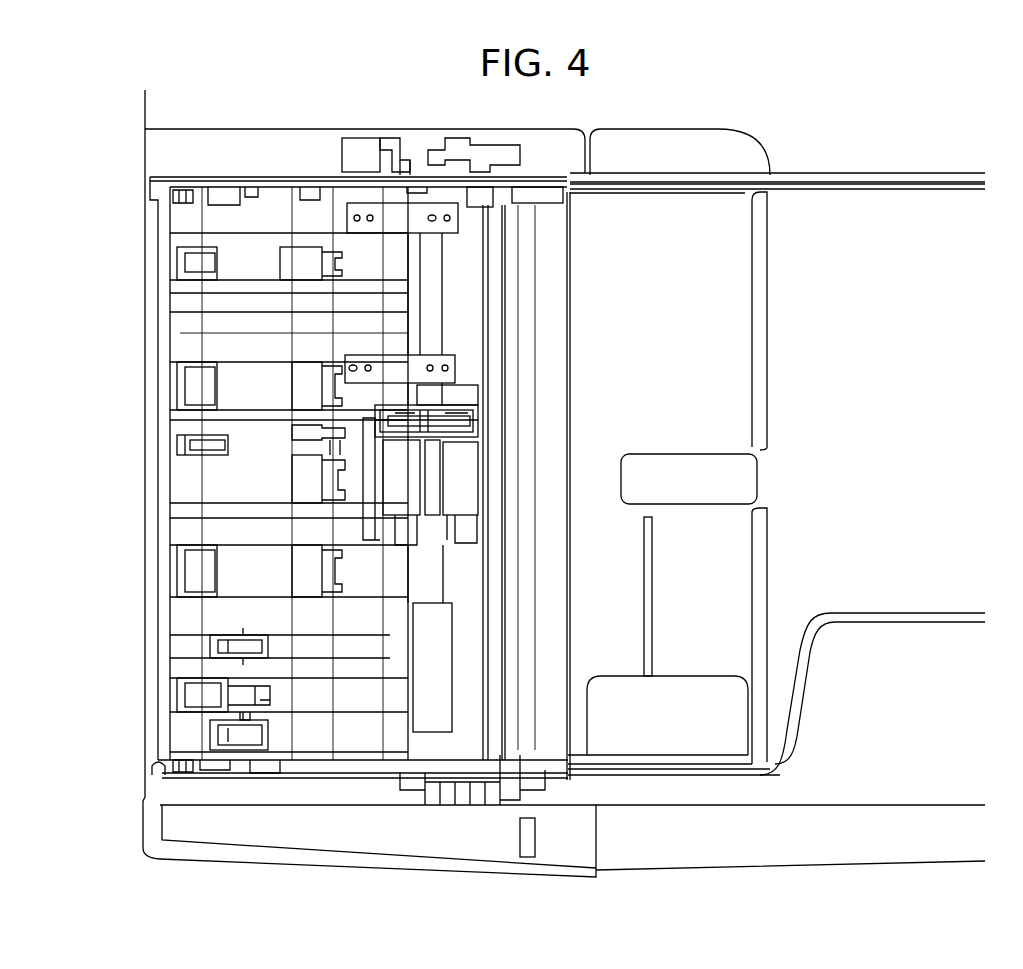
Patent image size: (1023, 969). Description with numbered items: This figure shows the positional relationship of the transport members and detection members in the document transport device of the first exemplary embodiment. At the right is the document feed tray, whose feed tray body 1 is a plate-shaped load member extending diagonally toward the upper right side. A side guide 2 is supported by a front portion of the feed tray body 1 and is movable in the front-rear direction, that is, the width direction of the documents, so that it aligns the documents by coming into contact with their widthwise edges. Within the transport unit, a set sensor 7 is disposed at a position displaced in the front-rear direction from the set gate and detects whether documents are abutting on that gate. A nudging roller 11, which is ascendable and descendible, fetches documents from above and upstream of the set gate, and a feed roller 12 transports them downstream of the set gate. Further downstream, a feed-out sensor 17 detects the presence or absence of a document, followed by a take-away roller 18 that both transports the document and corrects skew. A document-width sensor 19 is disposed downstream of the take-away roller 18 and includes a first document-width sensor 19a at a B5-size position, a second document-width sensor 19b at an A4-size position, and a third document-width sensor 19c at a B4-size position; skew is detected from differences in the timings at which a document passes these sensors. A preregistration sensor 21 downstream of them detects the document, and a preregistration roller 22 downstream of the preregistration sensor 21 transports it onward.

The feed tray body 1 is at (920, 613).
The side guide 2 is at (682, 195).
The set sensor 7 is at (430, 413).
The nudging roller 11 is at (470, 520).
The feed roller 12 is at (405, 525).
The feed-out sensor 17 is at (328, 435).
The take-away roller 18 is at (303, 378).
The document-width sensor 19 is at (154, 690).
The first document-width sensor 19a is at (220, 640).
The second document-width sensor 19b is at (215, 698).
The third document-width sensor 19c is at (175, 732).
The preregistration sensor 21 is at (178, 445).
The preregistration roller 22 is at (210, 372).